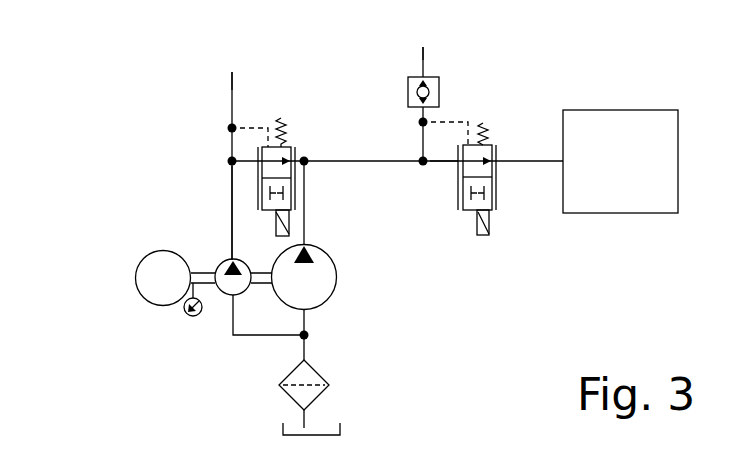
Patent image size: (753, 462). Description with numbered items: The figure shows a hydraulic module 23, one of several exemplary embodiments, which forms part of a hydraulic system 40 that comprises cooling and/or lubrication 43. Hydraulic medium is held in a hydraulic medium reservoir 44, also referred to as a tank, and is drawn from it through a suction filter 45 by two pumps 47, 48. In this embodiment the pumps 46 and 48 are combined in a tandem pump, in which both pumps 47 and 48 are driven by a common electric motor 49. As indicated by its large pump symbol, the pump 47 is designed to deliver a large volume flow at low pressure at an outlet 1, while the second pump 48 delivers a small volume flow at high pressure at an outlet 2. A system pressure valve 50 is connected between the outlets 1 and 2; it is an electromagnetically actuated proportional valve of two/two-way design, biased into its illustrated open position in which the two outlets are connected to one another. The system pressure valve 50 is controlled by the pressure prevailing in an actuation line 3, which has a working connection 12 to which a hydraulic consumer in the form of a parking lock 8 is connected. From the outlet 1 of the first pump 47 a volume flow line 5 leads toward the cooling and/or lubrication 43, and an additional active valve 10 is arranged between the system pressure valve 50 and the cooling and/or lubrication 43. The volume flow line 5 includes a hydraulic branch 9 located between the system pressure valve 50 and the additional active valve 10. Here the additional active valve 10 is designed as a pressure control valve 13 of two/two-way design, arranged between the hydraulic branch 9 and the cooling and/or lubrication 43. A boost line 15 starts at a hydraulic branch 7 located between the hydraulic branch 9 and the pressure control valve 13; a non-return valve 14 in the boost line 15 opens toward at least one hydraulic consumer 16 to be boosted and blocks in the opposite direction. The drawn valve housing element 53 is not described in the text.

The outlet 1 is at (304, 262).
The outlet 2 is at (232, 260).
The actuation line 3 is at (232, 194).
The volume flow line 5 is at (304, 202).
The hydraulic branch 7 is at (421, 142).
The parking lock 8 is at (240, 67).
The hydraulic branch 9 is at (304, 151).
The additional active valve 10 is at (498, 218).
The working connection 12 is at (232, 100).
The pressure control valve 13 is at (495, 150).
The non-return valve 14 is at (439, 81).
The boost line 15 is at (423, 55).
The hydraulic consumer 16 is at (435, 40).
The hydraulic module 23 is at (115, 126).
The hydraulic system 40 is at (542, 99).
The cooling and/or lubrication 43 is at (632, 173).
The hydraulic medium reservoir 44 is at (328, 442).
The suction filter 45 is at (321, 368).
The pump 46 is at (154, 284).
The pump 47 is at (304, 277).
The second pump 48 is at (218, 293).
The electric motor 49 is at (163, 278).
The system pressure valve 50 is at (282, 110).
The valve housing 53 is at (295, 146).